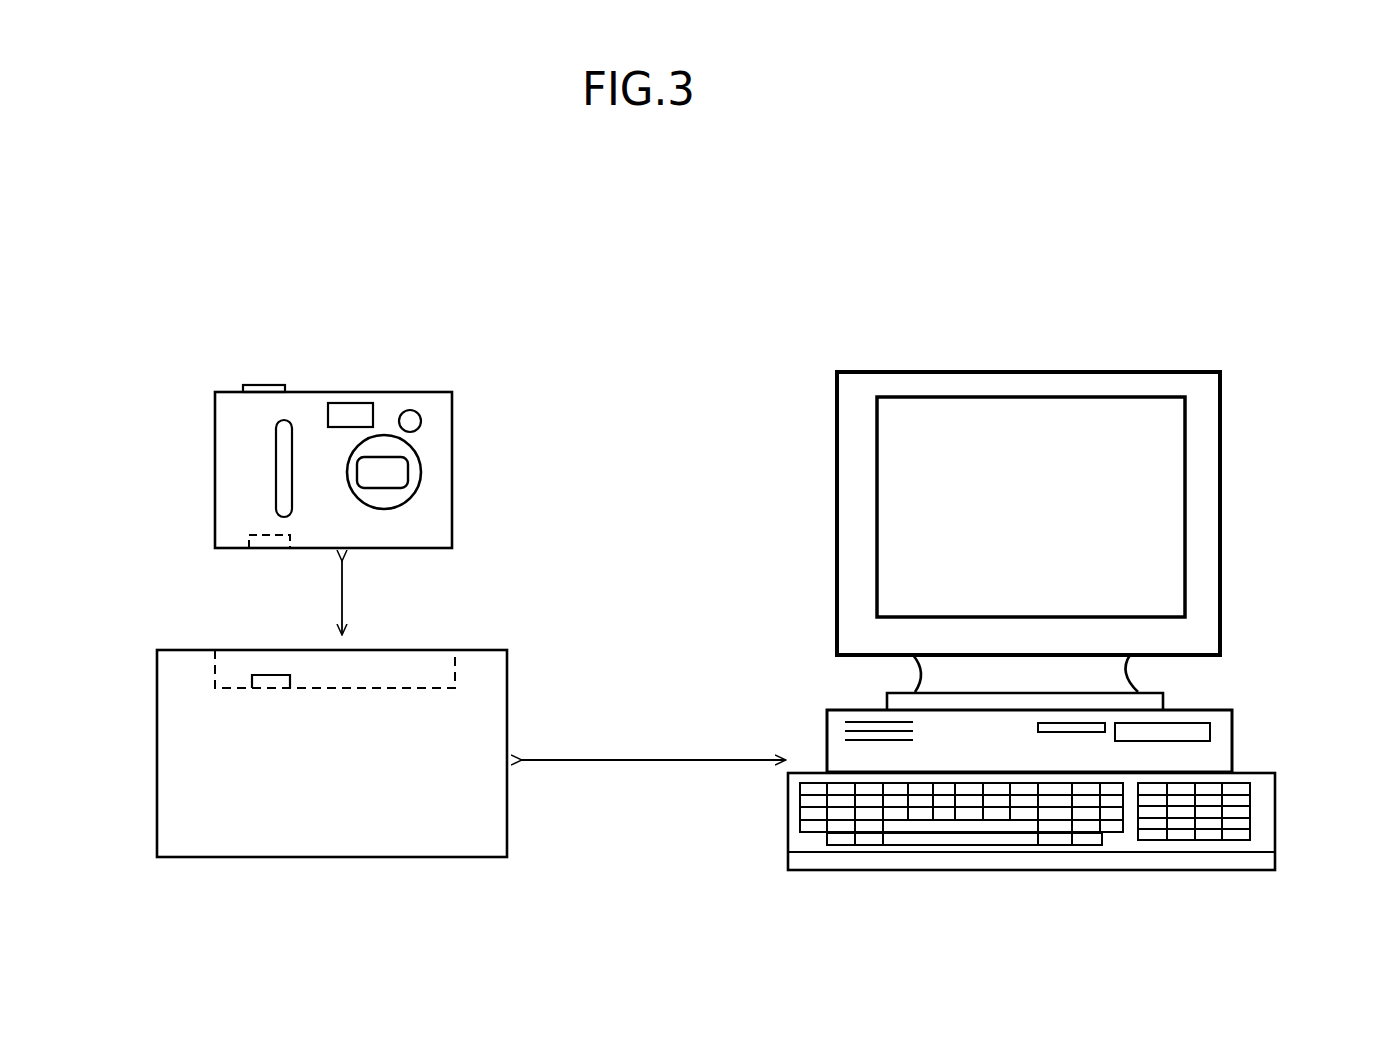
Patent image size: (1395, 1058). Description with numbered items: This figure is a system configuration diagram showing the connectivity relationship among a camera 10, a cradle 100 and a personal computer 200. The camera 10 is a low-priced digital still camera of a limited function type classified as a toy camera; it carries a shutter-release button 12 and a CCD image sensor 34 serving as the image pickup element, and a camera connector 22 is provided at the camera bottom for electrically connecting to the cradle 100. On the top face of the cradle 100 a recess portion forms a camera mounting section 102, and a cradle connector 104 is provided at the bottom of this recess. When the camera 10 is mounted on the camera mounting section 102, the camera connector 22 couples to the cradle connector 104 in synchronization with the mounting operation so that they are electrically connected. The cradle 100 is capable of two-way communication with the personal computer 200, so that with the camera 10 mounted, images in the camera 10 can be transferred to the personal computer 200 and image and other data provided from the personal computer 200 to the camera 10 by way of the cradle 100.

The camera 10 is at (401, 389).
The shutter-release button 12 is at (263, 383).
The CCD image sensor 34 is at (393, 470).
The camera connector 22 is at (262, 548).
The cradle 100 is at (190, 753).
The camera mounting section 102 is at (428, 663).
The cradle connector 104 is at (265, 675).
The personal computer 200 is at (1257, 715).